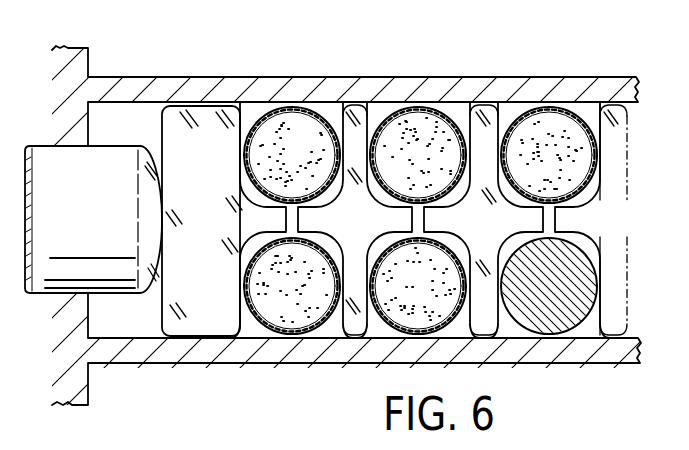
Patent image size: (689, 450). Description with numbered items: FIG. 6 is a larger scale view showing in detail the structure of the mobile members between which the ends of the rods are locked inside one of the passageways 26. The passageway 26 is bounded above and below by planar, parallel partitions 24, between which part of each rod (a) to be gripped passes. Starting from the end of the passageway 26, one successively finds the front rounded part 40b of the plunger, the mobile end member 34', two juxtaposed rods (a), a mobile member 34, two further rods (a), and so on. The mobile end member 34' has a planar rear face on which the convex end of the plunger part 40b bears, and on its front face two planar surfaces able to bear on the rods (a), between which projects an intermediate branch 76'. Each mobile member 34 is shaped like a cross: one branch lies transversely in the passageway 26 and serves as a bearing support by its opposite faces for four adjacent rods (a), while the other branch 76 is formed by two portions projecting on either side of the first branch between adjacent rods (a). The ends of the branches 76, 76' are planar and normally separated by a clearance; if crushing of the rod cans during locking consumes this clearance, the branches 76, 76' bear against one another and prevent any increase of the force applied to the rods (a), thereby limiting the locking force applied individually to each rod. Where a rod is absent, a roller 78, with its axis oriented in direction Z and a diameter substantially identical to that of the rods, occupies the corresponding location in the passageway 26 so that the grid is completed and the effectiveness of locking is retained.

The partition 24 is at (318, 88).
The passageway 26 is at (115, 122).
The front part of plunger 40b is at (110, 232).
The mobile end member 34' is at (202, 180).
The mobile cross-shaped member 34 is at (485, 180).
The rod a is at (453, 152).
The branch of cross-shaped member 76 is at (260, 166).
The intermediate branch 76' is at (240, 238).
The roller 78 is at (567, 314).